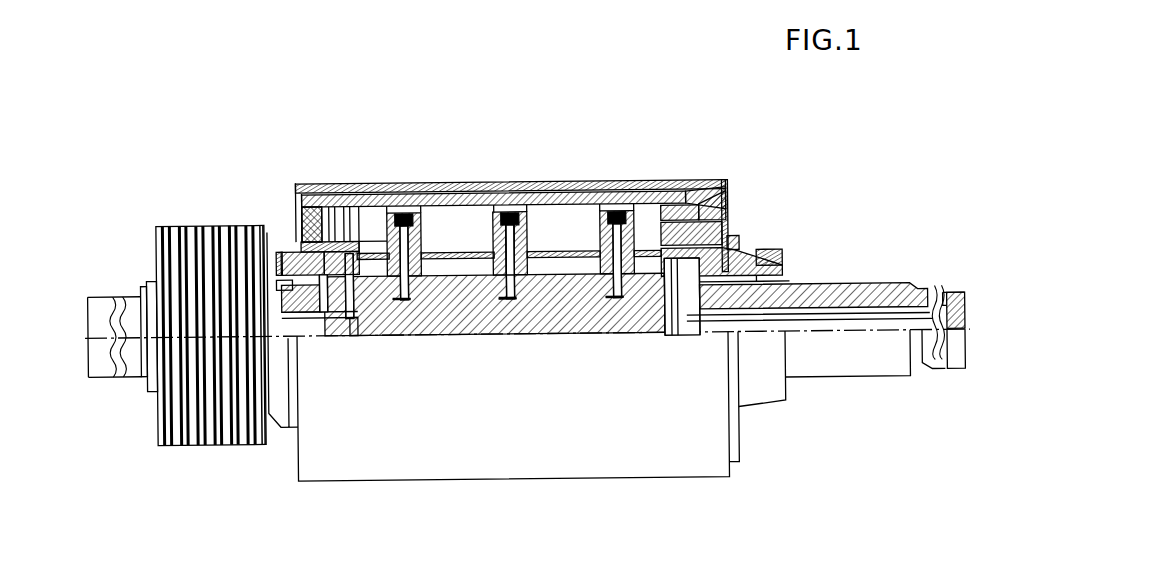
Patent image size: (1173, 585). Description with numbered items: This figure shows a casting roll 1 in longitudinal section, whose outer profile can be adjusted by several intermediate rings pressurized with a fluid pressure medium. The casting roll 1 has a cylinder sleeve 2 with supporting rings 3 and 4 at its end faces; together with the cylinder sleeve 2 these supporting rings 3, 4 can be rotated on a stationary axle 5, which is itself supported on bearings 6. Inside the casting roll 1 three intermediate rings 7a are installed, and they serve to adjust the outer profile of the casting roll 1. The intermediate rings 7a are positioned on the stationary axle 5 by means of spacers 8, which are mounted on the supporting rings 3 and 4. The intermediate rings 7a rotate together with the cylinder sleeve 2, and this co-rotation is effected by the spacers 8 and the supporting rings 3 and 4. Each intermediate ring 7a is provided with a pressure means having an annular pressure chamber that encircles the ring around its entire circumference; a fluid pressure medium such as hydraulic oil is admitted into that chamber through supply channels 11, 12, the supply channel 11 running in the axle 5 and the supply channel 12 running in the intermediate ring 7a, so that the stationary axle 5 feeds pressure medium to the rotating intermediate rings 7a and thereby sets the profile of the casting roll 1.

The casting roll 1 is at (404, 442).
The cylinder sleeve 2 is at (557, 184).
The supporting ring 3 is at (302, 210).
The supporting ring 4 is at (738, 247).
The stationary axle 5 is at (848, 300).
The bearings 6 is at (281, 252).
The intermediate rings 7a is at (438, 212).
The spacers 8 is at (571, 250).
The supply channel 11 is at (530, 306).
The supply channel 12 is at (488, 318).